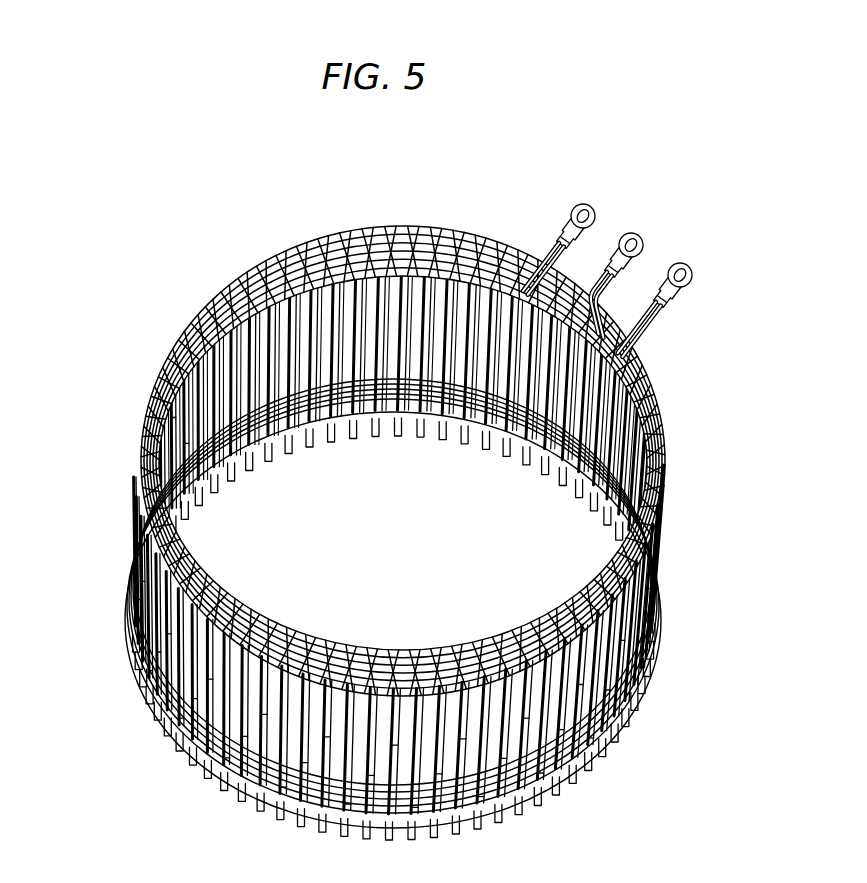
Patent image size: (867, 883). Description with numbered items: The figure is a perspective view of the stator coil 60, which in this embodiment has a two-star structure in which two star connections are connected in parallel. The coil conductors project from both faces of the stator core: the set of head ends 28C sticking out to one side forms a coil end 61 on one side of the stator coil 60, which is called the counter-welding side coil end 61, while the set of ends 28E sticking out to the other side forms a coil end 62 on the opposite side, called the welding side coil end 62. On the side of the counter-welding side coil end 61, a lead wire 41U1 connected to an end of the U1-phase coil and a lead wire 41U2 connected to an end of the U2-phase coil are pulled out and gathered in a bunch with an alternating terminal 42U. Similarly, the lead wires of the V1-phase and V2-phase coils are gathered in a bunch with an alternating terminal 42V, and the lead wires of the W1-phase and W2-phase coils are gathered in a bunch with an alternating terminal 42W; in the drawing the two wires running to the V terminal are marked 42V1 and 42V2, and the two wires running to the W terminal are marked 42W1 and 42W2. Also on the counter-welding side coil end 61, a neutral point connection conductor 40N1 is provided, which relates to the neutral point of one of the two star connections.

The stator coil 60 is at (399, 492).
The neutral point connection conductor 40N1 is at (408, 420).
The head end 28C is at (129, 359).
The end 28E is at (169, 768).
The counter-welding side coil end 61 is at (104, 464).
The welding side coil end 62 is at (133, 721).
The lead wire 41U1 is at (533, 255).
The lead wire 41U2 is at (535, 238).
The alternating terminal 42U is at (536, 213).
The alternating terminal 42V is at (654, 243).
The V-phase lead wire 1 42V1 is at (596, 264).
The V-phase lead wire 2 42V2 is at (600, 291).
The alternating terminal 42W is at (696, 293).
The W-phase lead wire 1 42W1 is at (641, 309).
The W-phase lead wire 2 42W2 is at (631, 328).